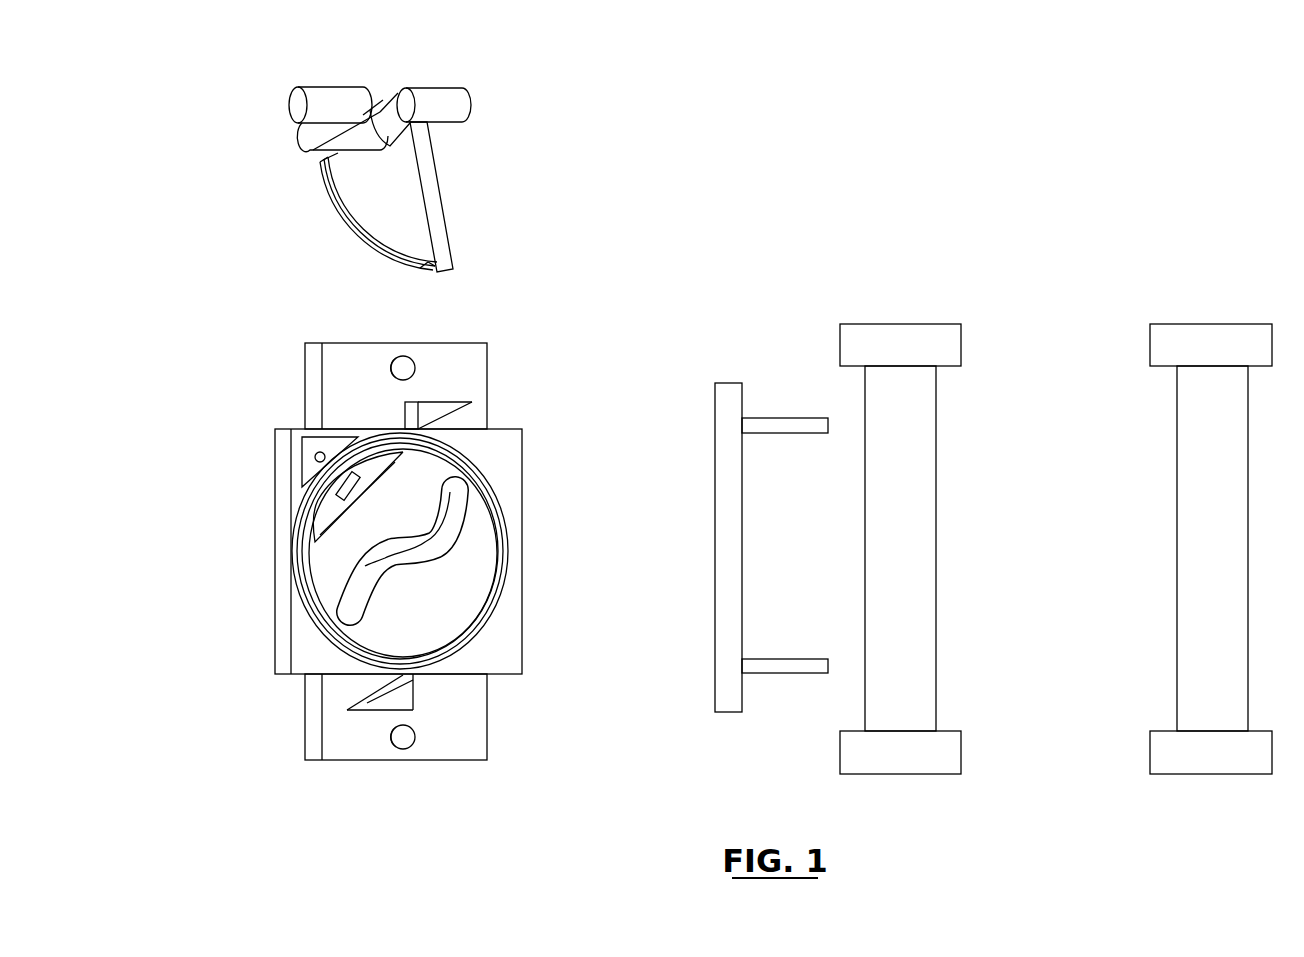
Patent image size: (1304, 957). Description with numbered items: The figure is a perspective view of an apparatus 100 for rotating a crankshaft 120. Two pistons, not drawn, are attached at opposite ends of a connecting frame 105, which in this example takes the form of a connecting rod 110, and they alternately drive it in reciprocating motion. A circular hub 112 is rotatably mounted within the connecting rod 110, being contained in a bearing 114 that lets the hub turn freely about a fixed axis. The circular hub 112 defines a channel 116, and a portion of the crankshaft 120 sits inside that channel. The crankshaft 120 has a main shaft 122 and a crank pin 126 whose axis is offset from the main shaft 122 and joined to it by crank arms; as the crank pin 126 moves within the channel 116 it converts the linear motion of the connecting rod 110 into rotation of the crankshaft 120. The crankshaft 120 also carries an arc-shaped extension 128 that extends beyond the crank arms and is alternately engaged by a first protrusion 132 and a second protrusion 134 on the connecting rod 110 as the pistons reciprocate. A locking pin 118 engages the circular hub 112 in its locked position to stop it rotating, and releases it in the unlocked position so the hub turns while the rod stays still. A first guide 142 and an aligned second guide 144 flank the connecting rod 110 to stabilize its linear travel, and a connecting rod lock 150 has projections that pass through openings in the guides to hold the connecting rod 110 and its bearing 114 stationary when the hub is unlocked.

The apparatus 100 is at (1143, 128).
The connecting frame 105 is at (522, 493).
The connecting rod 110 is at (522, 525).
The circular hub 112 is at (443, 617).
The bearing 114 is at (462, 457).
The channel 116 is at (418, 565).
The locking pin 118 is at (320, 457).
The crankshaft 120 is at (538, 50).
The main shaft 122 is at (344, 90).
The crank pin 126 is at (370, 140).
The arc-shaped extension 128 is at (395, 220).
The first protrusion 132 is at (472, 402).
The second protrusion 134 is at (367, 707).
The first guide 142 is at (913, 663).
The second guide 144 is at (1190, 600).
The connecting rod lock 150 is at (734, 383).